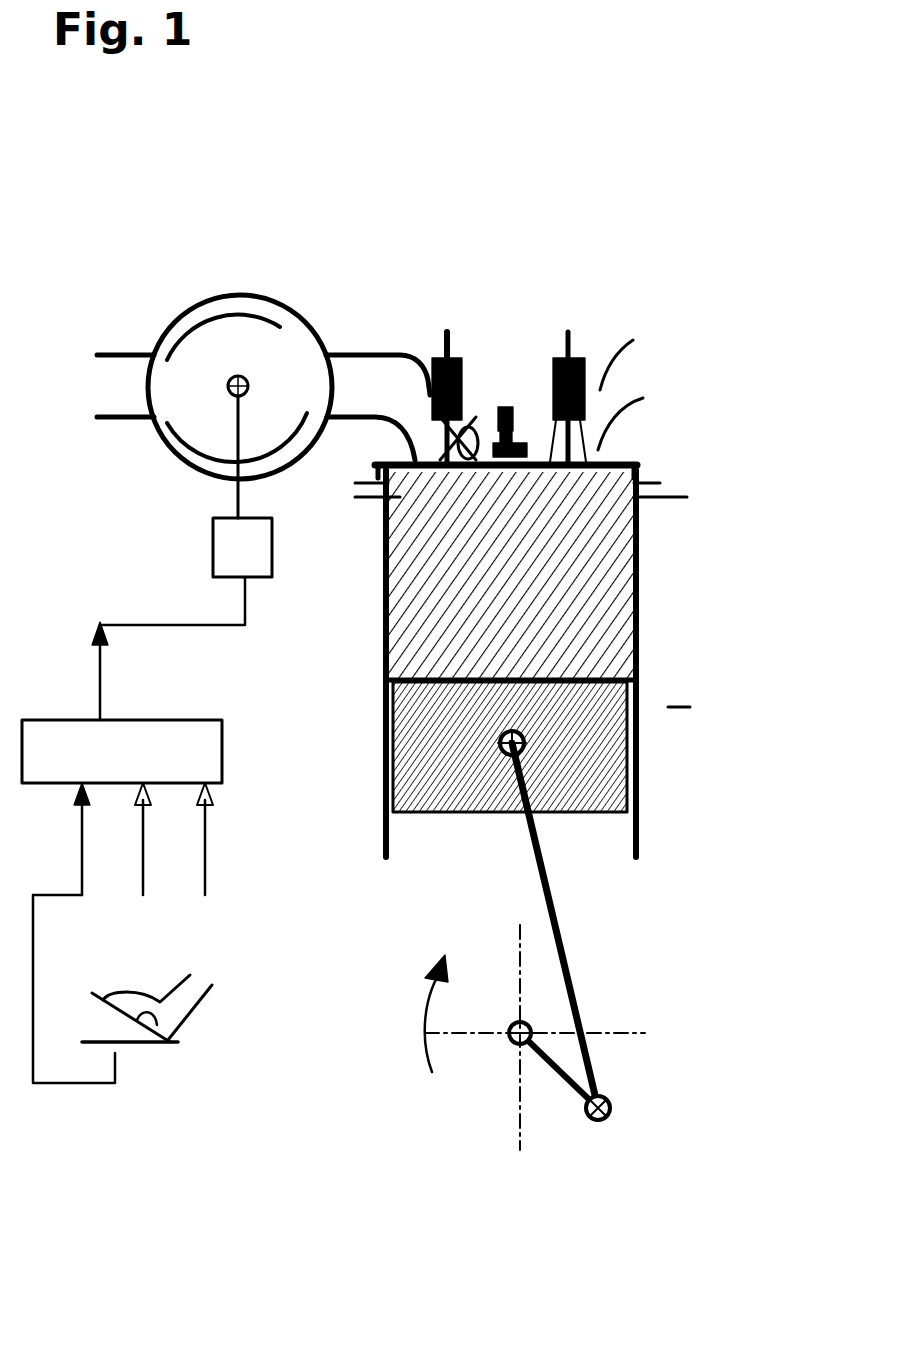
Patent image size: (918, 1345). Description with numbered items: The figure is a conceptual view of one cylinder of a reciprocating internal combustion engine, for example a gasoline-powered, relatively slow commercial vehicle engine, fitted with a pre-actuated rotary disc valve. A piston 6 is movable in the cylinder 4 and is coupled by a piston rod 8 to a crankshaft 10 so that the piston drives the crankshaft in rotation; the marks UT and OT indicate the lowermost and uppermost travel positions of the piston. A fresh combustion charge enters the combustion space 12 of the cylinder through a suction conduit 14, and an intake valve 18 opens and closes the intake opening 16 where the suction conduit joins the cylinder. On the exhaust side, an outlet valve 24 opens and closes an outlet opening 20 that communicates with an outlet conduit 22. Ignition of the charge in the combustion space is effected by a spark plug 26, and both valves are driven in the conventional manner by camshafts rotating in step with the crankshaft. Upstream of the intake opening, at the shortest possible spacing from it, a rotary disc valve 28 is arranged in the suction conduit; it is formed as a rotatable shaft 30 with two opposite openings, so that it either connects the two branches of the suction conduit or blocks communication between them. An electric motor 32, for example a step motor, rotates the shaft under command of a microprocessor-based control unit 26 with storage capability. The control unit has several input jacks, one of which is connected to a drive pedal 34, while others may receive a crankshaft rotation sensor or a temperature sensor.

The cylinder 4 is at (637, 623).
The piston 6 is at (632, 772).
The piston rod 8 is at (572, 963).
The crankshaft 10 is at (560, 1070).
The combustion space 12 is at (428, 626).
The suction conduit 14 is at (112, 385).
The intake opening 16 is at (455, 440).
The intake valve 18 is at (448, 350).
The outlet opening 20 is at (593, 453).
The outlet conduit 22 is at (633, 340).
The outlet valve 24 is at (570, 343).
The control unit 26 is at (118, 750).
The rotary disc valve 28 is at (190, 302).
The rotatable shaft 30 is at (257, 307).
The electric motor 32 is at (243, 540).
The drive pedal 34 is at (150, 1045).